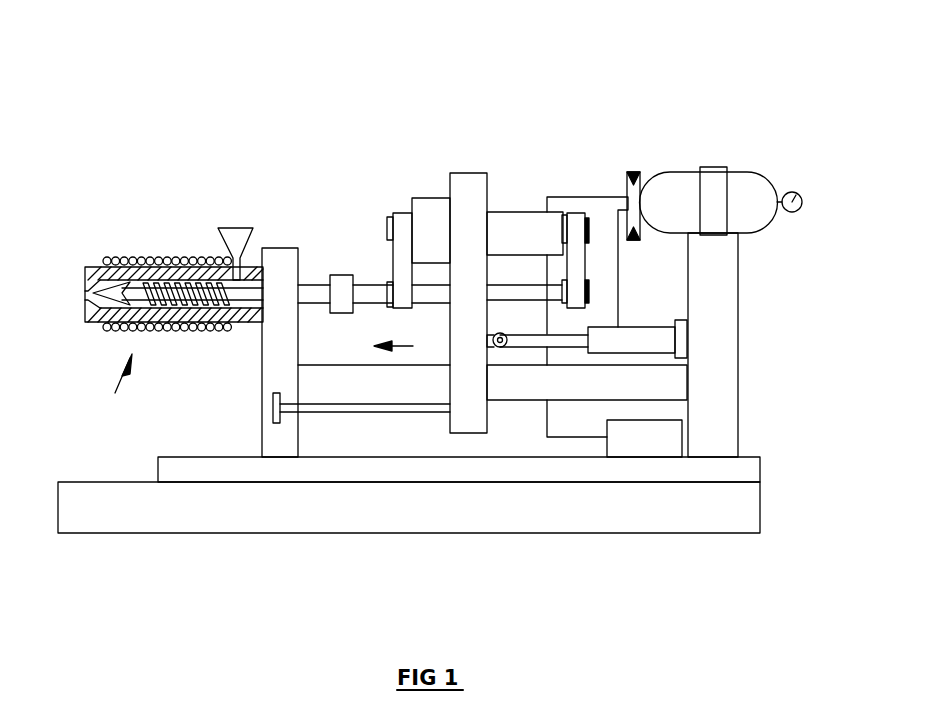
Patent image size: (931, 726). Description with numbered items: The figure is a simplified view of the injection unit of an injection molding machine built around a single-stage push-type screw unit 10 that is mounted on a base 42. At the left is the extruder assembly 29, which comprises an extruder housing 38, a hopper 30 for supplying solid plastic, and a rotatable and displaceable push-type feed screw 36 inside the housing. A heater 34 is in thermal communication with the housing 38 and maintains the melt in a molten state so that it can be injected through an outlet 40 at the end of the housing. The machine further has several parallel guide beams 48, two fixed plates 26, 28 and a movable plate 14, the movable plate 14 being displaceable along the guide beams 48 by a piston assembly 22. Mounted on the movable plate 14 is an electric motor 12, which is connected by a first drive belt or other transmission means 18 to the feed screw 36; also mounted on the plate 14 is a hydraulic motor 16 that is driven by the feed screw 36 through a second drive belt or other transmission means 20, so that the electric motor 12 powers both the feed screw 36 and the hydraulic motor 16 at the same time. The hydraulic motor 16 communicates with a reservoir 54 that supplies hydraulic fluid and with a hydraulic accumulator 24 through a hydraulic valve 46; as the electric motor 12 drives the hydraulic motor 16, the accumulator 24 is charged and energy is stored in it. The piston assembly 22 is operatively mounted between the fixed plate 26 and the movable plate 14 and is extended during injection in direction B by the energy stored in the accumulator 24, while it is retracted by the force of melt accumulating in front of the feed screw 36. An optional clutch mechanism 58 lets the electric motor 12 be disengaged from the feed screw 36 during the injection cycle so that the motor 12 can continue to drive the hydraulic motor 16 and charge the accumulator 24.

The push-type screw unit 10 is at (514, 185).
The electric motor 12 is at (430, 200).
The movable plate 14 is at (468, 172).
The hydraulic motor 16 is at (537, 212).
The first drive belt 18 is at (402, 213).
The second drive belt 20 is at (575, 212).
The piston assembly 22 is at (660, 327).
The hydraulic accumulator 24 is at (740, 172).
The fixed plate 26 is at (738, 368).
The fixed plate 28 is at (278, 247).
The extruder assembly 29 is at (115, 394).
The hopper 30 is at (237, 228).
The heater 34 is at (107, 262).
The feed screw 36 is at (100, 318).
The extruder housing 38 is at (248, 313).
The outlet 40 is at (90, 295).
The base 42 is at (243, 533).
The hydraulic valve 46 is at (636, 172).
The guide beams 48 is at (404, 410).
The reservoir 54 is at (604, 446).
The clutch mechanism 58 is at (334, 275).